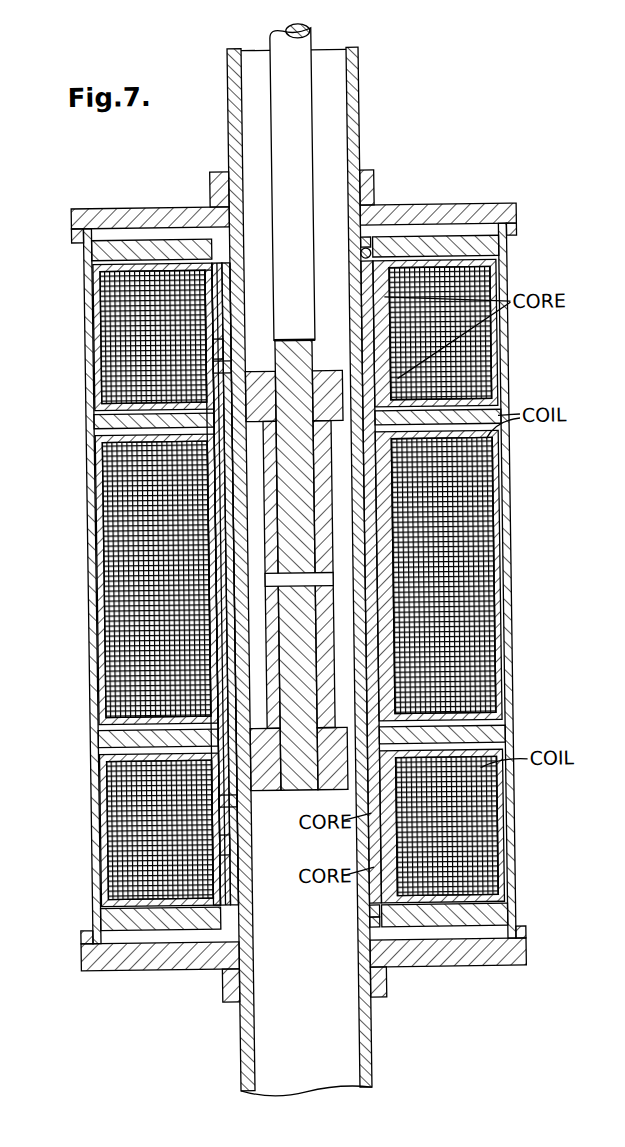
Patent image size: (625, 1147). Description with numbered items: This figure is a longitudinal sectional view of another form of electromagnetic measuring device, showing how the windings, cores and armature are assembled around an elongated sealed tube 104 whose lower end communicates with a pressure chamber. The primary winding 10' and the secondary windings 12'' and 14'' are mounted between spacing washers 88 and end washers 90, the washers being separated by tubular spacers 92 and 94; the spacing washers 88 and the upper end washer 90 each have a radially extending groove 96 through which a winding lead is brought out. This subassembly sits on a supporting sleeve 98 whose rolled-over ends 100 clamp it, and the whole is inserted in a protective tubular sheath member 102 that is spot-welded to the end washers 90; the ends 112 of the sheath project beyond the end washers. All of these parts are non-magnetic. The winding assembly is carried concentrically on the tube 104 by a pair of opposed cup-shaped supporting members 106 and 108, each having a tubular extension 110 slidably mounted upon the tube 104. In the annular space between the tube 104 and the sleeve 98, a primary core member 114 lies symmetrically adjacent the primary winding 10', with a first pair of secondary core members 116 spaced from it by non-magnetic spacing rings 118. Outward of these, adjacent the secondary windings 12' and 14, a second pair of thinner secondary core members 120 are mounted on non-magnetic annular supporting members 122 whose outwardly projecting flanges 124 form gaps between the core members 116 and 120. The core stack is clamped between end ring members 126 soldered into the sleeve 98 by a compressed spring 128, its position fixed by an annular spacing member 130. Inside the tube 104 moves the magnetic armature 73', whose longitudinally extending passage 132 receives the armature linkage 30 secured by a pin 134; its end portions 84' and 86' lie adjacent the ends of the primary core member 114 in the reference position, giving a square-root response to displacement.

The armature linkage 30 is at (305, 25).
The cup-shaped supporting member 106 is at (110, 198).
The cup-shaped supporting member 108 is at (127, 960).
The rolled-over ends of supporting sleeve 100 is at (182, 198).
The tubular extension 110 is at (371, 175).
The ends of sheath member 112 is at (68, 225).
The protective tubular sheath member 102 is at (84, 670).
The end washer 90 is at (110, 242).
The spacing washer 88 is at (95, 411).
The radially extending groove 96 is at (88, 260).
The secondary winding 12'' is at (126, 337).
The secondary winding 12' is at (466, 333).
The primary winding 10' is at (301, 578).
The secondary winding 14'' is at (132, 830).
The secondary winding 14 is at (473, 826).
The second secondary core member 120 is at (220, 266).
The annular supporting member 122 is at (216, 300).
The tubular spacer 92 is at (213, 322).
The first secondary core member 116 is at (218, 340).
The non-magnetic spacing ring 118 is at (226, 358).
The tubular spacer 94 is at (206, 514).
The supporting sleeve 98 is at (208, 576).
The primary core member 114 is at (222, 624).
The outwardly projecting flange 124 is at (360, 310).
The end ring member 126 is at (357, 234).
The compressed spring 128 is at (357, 246).
The annular spacing member 130 is at (357, 903).
The sealed tube 104 is at (238, 1000).
The armature 73' is at (350, 573).
The pin 134 is at (330, 562).
The armature end portion 84' is at (297, 383).
The armature end portion 86' is at (302, 770).
The longitudinally extending passage 132 is at (299, 578).